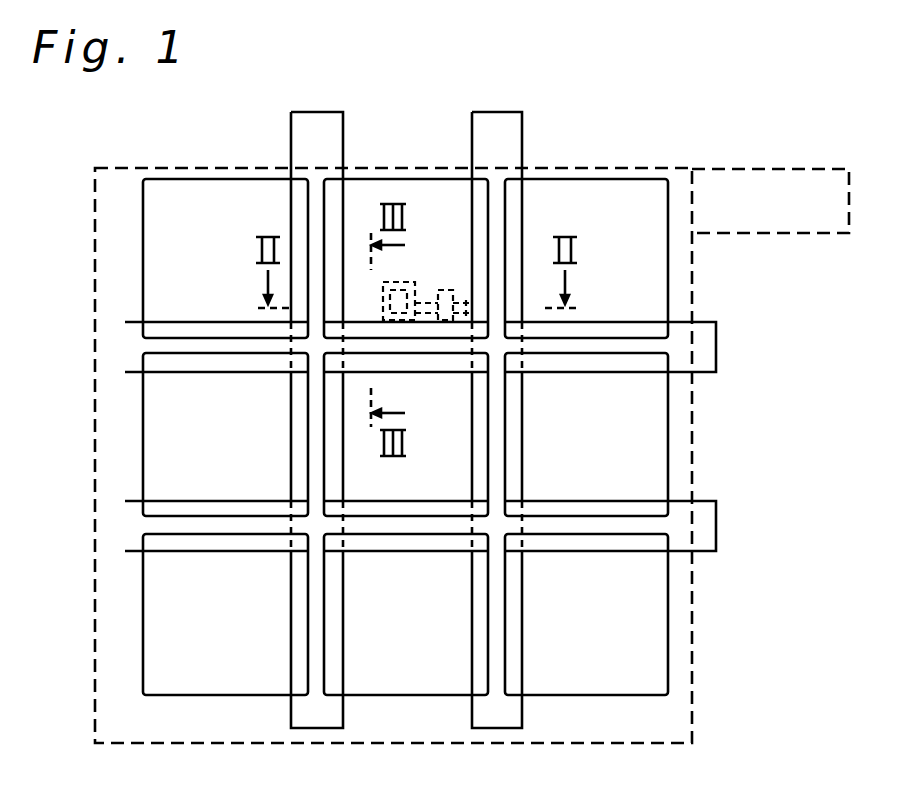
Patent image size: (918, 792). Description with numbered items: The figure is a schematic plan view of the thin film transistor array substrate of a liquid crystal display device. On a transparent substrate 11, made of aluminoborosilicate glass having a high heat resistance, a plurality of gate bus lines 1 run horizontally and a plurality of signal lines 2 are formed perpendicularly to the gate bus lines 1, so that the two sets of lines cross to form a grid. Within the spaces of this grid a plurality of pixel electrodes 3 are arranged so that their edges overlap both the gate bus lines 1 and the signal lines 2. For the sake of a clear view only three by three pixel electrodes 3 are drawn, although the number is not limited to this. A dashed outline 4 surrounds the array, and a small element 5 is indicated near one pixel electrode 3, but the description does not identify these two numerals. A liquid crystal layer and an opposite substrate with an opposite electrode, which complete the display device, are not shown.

The gate bus line 1 is at (703, 350).
The signal line 2 is at (507, 133).
The pixel electrode 3 is at (618, 198).
The substrate region (dashed outline) 4 is at (694, 676).
The thin film transistor 5 is at (448, 283).
The transparent substrate 11 is at (772, 458).